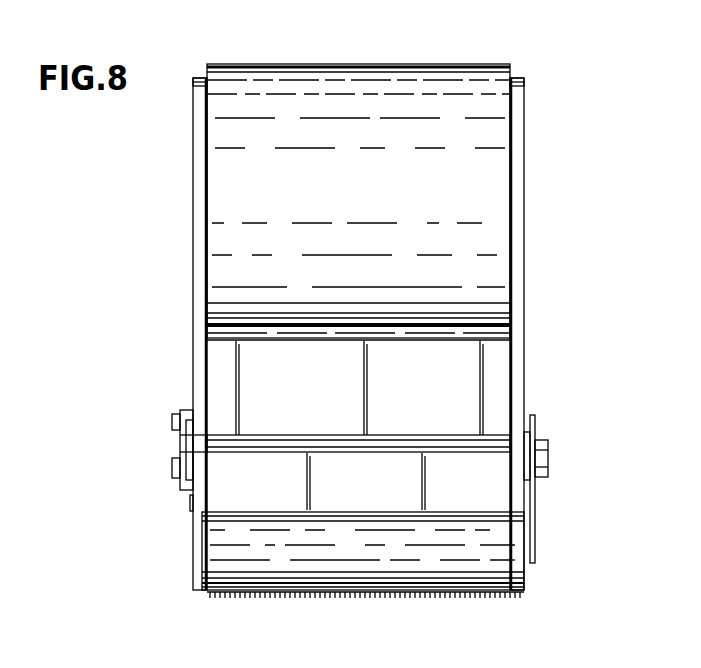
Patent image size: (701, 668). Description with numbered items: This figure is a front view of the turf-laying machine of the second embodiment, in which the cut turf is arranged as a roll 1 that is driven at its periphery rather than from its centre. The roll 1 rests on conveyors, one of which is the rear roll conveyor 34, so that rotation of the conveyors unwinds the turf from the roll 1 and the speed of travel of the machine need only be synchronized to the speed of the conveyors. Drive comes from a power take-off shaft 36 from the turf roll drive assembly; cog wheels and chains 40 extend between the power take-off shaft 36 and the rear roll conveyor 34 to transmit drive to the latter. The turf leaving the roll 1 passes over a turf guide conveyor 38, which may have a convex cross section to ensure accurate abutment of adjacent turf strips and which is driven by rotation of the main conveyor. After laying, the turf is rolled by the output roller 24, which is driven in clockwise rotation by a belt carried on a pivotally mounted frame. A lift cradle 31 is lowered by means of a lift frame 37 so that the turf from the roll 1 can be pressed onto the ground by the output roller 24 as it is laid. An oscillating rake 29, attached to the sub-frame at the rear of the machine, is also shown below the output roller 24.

The roll 1 is at (351, 96).
The output roller 24 is at (193, 557).
The oscillating rake 29 is at (380, 600).
The lift cradle 31 is at (524, 81).
The rear roll conveyor 34 is at (542, 328).
The power take-off shaft 36 is at (548, 458).
The lift frame 37 is at (193, 516).
The turf guide conveyor 38 is at (555, 473).
The cog wheels and chains 40 is at (168, 425).